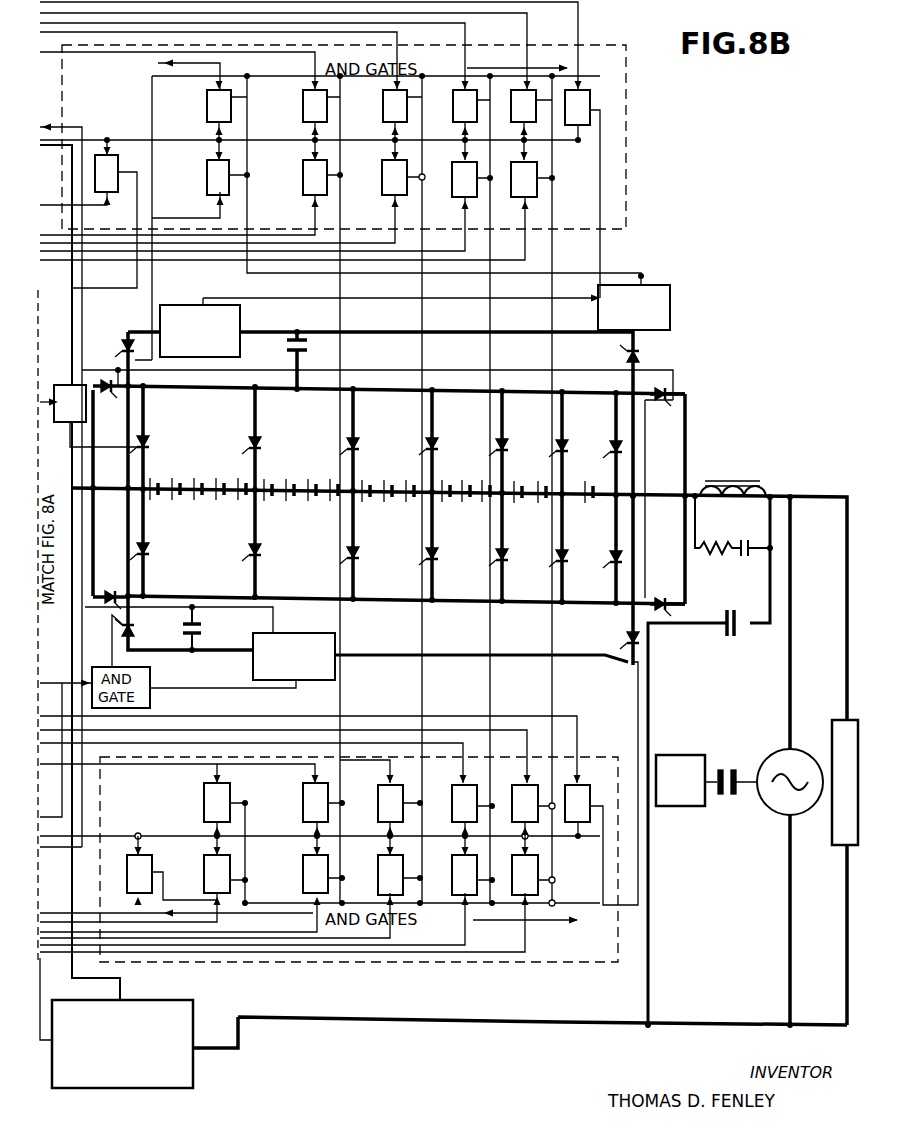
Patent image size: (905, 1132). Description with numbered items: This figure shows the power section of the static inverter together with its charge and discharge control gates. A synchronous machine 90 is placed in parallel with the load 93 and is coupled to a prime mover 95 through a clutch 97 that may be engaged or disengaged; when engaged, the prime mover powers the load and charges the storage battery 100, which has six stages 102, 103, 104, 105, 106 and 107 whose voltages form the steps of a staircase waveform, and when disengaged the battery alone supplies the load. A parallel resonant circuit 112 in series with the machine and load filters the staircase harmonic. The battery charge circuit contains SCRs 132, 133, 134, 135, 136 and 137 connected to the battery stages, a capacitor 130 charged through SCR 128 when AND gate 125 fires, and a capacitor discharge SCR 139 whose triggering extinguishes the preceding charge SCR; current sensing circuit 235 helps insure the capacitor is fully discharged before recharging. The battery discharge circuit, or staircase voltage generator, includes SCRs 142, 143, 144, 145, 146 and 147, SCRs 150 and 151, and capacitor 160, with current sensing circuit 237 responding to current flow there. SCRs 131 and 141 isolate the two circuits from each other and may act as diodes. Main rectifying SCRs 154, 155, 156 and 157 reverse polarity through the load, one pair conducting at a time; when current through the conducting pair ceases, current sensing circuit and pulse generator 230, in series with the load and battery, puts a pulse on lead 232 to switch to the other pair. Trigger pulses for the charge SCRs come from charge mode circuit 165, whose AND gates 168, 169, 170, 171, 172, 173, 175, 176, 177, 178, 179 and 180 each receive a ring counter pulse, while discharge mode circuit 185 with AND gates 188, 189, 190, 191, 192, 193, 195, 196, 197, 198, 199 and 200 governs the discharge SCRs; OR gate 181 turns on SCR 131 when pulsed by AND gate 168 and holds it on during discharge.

The synchronous machine 90 is at (773, 814).
The load 93 is at (832, 730).
The prime mover 95 is at (679, 759).
The clutch 97 is at (720, 798).
The storage battery 100 is at (375, 480).
The battery stage 102 is at (178, 510).
The battery stage 103 is at (290, 510).
The battery stage 104 is at (372, 504).
The battery stage 105 is at (446, 504).
The battery stage 106 is at (518, 504).
The battery stage 107 is at (600, 500).
The parallel resonant circuit 112 is at (733, 503).
The AND gate 125 is at (670, 308).
The SCR 128 is at (642, 358).
The capacitor 130 is at (312, 352).
The SCR 131 is at (150, 436).
The SCR 132 is at (262, 437).
The SCR 133 is at (360, 438).
The SCR 134 is at (439, 438).
The SCR 135 is at (509, 439).
The SCR 136 is at (569, 440).
The SCR 137 is at (610, 455).
The SCR 139 is at (124, 336).
The SCR 141 is at (150, 556).
The SCR 142 is at (262, 557).
The SCR 143 is at (360, 560).
The SCR 144 is at (439, 561).
The SCR 145 is at (509, 562).
The SCR 146 is at (569, 563).
The SCR 147 is at (608, 550).
The SCR 150 is at (132, 644).
The SCR 151 is at (626, 650).
The main rectifying SCR 154 is at (115, 400).
The main rectifying SCR 155 is at (656, 612).
The main rectifying SCR 156 is at (100, 590).
The main rectifying SCR 157 is at (660, 385).
The capacitor 160 is at (214, 624).
The charge mode circuit 165 is at (626, 140).
The AND gate 168 is at (130, 153).
The AND gate 169 is at (207, 178).
The AND gate 170 is at (303, 177).
The AND gate 171 is at (382, 181).
The AND gate 172 is at (452, 191).
The AND gate 173 is at (537, 190).
The AND gate 175 is at (207, 105).
The AND gate 176 is at (303, 105).
The AND gate 177 is at (383, 108).
The AND gate 178 is at (453, 108).
The AND gate 179 is at (511, 114).
The AND gate 180 is at (578, 125).
The OR gate 181 is at (62, 422).
The discharge mode circuit 185 is at (562, 962).
The AND gate 188 is at (158, 848).
The AND gate 189 is at (204, 868).
The AND gate 190 is at (303, 864).
The AND gate 191 is at (380, 868).
The AND gate 192 is at (454, 870).
The AND gate 193 is at (530, 875).
The AND gate 195 is at (204, 799).
The AND gate 196 is at (303, 799).
The AND gate 197 is at (379, 794).
The AND gate 198 is at (452, 794).
The AND gate 199 is at (513, 792).
The AND gate 200 is at (590, 818).
The current sensing circuit and pulse generator 230 is at (110, 1088).
The conductive lead 232 is at (40, 1042).
The current sensing circuit 235 is at (188, 305).
The current sensing circuit 237 is at (300, 680).